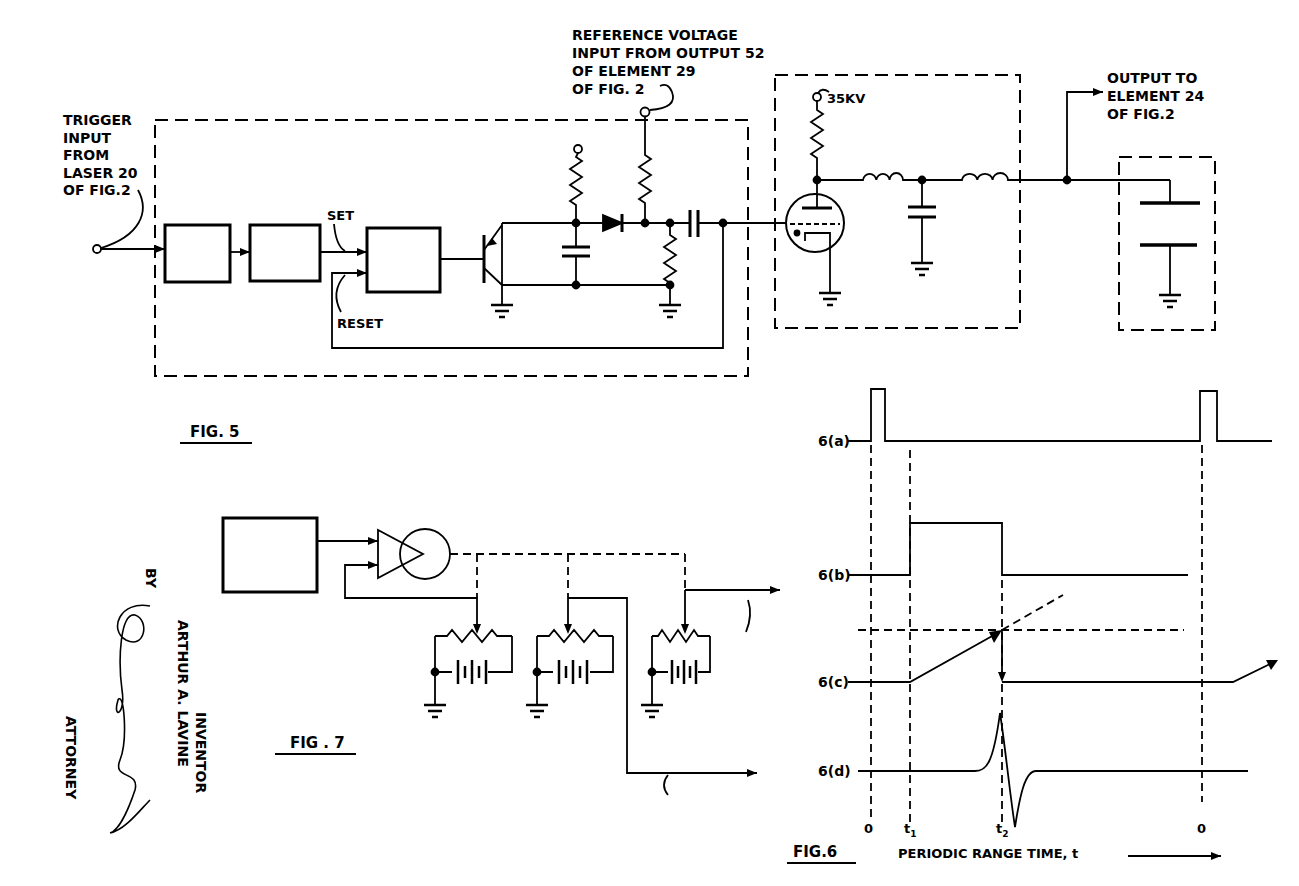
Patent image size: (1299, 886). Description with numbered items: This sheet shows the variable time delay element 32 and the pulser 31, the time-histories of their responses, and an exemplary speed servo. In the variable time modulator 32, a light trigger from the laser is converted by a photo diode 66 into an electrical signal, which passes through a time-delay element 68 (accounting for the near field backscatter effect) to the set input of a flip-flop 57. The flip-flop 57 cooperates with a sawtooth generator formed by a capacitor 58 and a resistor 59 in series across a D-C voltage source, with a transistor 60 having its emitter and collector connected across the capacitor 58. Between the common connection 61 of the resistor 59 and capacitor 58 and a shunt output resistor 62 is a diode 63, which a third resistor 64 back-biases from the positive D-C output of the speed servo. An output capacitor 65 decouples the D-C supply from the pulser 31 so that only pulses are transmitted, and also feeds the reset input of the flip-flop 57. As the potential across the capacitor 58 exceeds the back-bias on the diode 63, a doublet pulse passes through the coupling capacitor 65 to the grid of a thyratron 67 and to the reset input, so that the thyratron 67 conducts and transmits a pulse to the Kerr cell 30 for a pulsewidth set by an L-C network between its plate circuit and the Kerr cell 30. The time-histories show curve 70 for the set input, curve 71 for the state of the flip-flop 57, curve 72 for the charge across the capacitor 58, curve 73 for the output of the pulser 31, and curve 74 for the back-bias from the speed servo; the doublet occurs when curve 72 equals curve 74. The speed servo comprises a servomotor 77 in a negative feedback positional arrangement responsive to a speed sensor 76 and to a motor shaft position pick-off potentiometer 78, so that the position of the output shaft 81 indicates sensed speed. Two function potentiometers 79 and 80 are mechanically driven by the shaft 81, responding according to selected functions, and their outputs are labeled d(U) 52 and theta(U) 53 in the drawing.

In FIG. 5, the Kerr cell 30 is at (1198, 228).
In FIG. 5, the pulser 31 is at (840, 312).
In FIG. 5, the variable time delay element 32 is at (530, 363).
In FIG. 5, the flip-flop 57 is at (428, 250).
In FIG. 5, the capacitor 58 is at (576, 262).
In FIG. 5, the resistor 59 is at (580, 191).
In FIG. 5, the transistor 60 is at (490, 263).
In FIG. 5, the common connection 61 is at (576, 222).
In FIG. 5, the shunt output resistor 62 is at (675, 258).
In FIG. 5, the diode 63 is at (612, 231).
In FIG. 5, the third resistor 64 is at (652, 167).
In FIG. 5, the output capacitor 65 is at (700, 222).
In FIG. 5, the photo diode 66 is at (204, 281).
In FIG. 5, the thyratron 67 is at (838, 232).
In FIG. 5, the time-delay element 68 is at (290, 267).
In FIG. 6, the curve 70 is at (886, 395).
In FIG. 6, the curve 71 is at (955, 523).
In FIG. 6, the curve 72 is at (949, 662).
In FIG. 6, the curve 73 is at (1008, 756).
In FIG. 6, the curve 74 is at (1068, 625).
In FIG. 7, the speed sensor 76 is at (305, 527).
In FIG. 7, the servomotor 77 is at (426, 540).
In FIG. 7, the motor shaft position pick-off potentiometer 78 is at (430, 655).
In FIG. 7, the function potentiometer 79 is at (562, 608).
In FIG. 7, the function potentiometer 80 is at (696, 587).
In FIG. 7, the output shaft 81 is at (513, 552).
In FIG. 7, the output d(U) 52 is at (700, 775).
In FIG. 7, the output theta(U) 53 is at (763, 600).